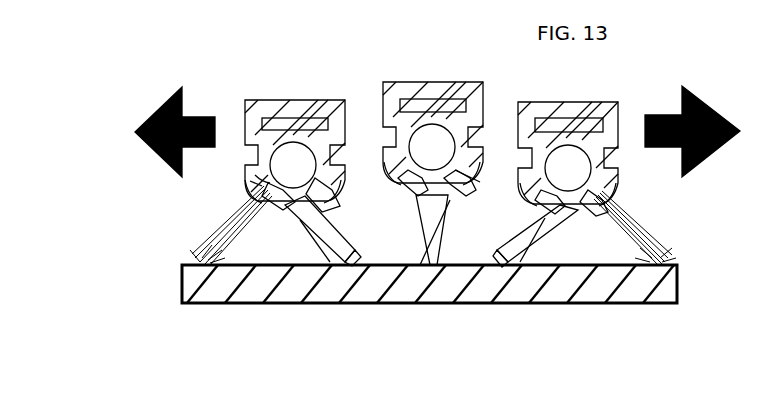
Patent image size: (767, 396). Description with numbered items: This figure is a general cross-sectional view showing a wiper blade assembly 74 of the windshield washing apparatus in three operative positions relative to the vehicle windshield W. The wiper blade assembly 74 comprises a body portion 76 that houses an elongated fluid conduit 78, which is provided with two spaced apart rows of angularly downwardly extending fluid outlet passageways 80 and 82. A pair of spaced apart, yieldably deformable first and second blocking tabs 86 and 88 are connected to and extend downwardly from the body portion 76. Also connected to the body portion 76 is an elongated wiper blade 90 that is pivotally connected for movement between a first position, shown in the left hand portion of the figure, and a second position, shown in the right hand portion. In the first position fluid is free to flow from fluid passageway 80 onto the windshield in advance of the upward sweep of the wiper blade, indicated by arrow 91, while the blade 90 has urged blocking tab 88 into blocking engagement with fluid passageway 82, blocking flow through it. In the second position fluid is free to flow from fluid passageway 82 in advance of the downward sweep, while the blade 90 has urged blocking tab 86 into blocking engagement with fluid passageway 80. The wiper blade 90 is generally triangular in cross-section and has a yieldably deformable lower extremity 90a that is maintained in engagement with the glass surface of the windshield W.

The wiper blade assembly 74 is at (300, 88).
The body portion 76 is at (245, 181).
The fluid conduit 78 is at (290, 157).
The fluid outlet passageway 80 is at (262, 195).
The fluid outlet passageway 82 is at (460, 174).
The first blocking tab 86 is at (270, 210).
The second blocking tab 88 is at (335, 196).
The wiper blade 90 is at (318, 272).
The lower extremity 90a is at (366, 268).
The arrow 91 is at (160, 108).
The vehicle windshield W is at (655, 293).